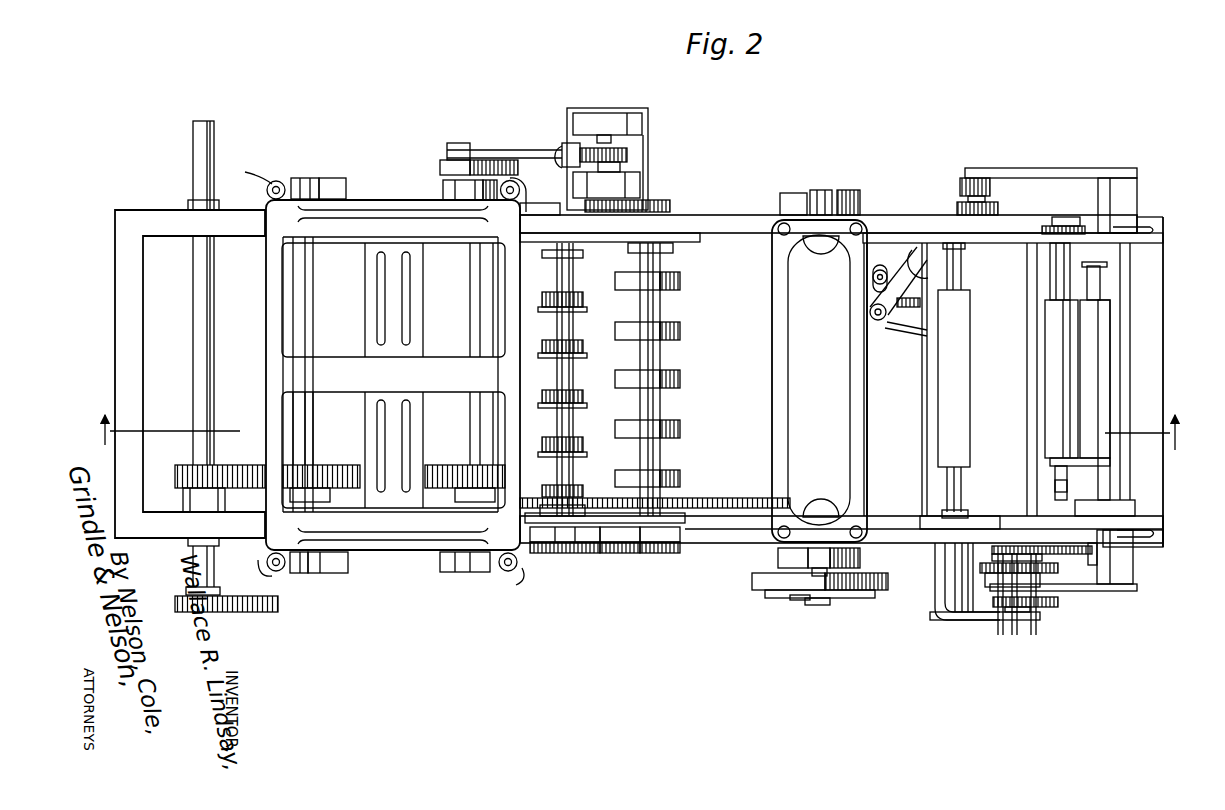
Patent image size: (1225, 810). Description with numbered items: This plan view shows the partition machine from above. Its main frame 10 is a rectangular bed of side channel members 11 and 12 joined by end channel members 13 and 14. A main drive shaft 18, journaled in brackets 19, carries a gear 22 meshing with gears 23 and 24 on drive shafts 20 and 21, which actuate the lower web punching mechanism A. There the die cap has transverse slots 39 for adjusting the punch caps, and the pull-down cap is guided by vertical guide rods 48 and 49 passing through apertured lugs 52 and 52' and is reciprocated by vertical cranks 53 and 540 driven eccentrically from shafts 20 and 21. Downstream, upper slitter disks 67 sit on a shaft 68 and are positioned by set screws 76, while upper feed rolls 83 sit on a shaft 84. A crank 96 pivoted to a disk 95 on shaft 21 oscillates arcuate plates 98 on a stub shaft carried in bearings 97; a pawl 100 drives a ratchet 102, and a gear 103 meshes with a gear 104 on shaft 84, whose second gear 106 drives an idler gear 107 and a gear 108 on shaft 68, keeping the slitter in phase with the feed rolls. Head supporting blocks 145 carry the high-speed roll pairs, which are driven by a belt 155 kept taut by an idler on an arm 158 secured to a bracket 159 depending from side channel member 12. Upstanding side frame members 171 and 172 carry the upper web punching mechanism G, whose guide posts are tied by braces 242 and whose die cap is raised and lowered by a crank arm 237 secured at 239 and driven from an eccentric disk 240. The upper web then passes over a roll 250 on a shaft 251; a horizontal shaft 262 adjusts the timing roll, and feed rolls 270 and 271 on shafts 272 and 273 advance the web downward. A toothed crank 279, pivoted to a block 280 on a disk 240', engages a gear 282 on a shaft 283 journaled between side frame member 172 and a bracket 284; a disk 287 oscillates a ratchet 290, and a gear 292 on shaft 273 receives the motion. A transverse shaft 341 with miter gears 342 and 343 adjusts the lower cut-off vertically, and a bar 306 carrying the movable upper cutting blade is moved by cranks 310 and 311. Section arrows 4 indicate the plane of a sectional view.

The main frame 10 is at (745, 218).
The side channel member 11 is at (717, 540).
The side channel member 12 is at (740, 235).
The end channel member 13 is at (115, 293).
The end channel member 14 is at (1165, 343).
The main drive shaft 18 is at (205, 160).
The bracket 19 is at (190, 206).
The drive shaft 20 is at (305, 293).
The drive shaft 21 is at (470, 413).
The gear 22 is at (182, 465).
The gear 23 is at (328, 475).
The gear 24 is at (438, 475).
The slot 39 is at (362, 310).
The vertical guide rod 48 is at (520, 190).
The vertical guide rod 49 is at (276, 185).
The apertured lug 52 is at (523, 399).
The apertured lug 52' is at (235, 394).
The vertical crank 53 is at (443, 188).
The vertical crank 540 is at (322, 180).
The upper slitter disk 67 is at (575, 345).
The shaft 68 is at (573, 480).
The set screw 76 is at (566, 300).
The upper feed roll 83 is at (670, 380).
The shaft 84 is at (662, 310).
The disk 95 is at (442, 165).
The crank 96 is at (497, 149).
The bearing 97 is at (457, 143).
The arcuate plate 98 is at (570, 150).
The pawl 100 is at (590, 130).
The ratchet 102 is at (625, 152).
The gear 103 is at (630, 195).
The gear 104 is at (665, 203).
The second gear 106 is at (648, 556).
The idler gear 107 is at (605, 558).
The gear 108 is at (558, 556).
The head supporting block 145 is at (1030, 390).
The belt 155 is at (878, 322).
The arm 158 is at (875, 283).
The bracket 159 is at (884, 245).
The upstanding side frame member 171 is at (928, 232).
The upstanding side frame member 172 is at (935, 520).
The crank arm 237 is at (820, 192).
The securing point 239 is at (805, 560).
The disk 240 is at (811, 386).
The disk 240' is at (842, 624).
The brace 242 is at (775, 330).
The roll 250 is at (942, 393).
The shaft 251 is at (952, 478).
The horizontal shaft 262 is at (1125, 388).
The feed roll 270 is at (1105, 360).
The feed roll 271 is at (1060, 355).
The shaft 272 is at (1100, 290).
The shaft 273 is at (1058, 290).
The crank 279 is at (845, 600).
The block 280 is at (808, 605).
The gear 282 is at (1015, 610).
The shaft 283 is at (1020, 628).
The bracket 284 is at (960, 615).
The disk 287 is at (1063, 570).
The ratchet 290 is at (999, 548).
The gear 292 is at (1098, 568).
The elongated bar 306 is at (1138, 200).
The crank 310 is at (1045, 168).
The crank 311 is at (1098, 593).
The transversely extending shaft 341 is at (1046, 325).
The miter gear 342 is at (1048, 258).
The miter gear 343 is at (1055, 488).
The section line 4 is at (157, 430).
The web punching mechanism A is at (432, 350).
The web punching mechanism G is at (770, 432).